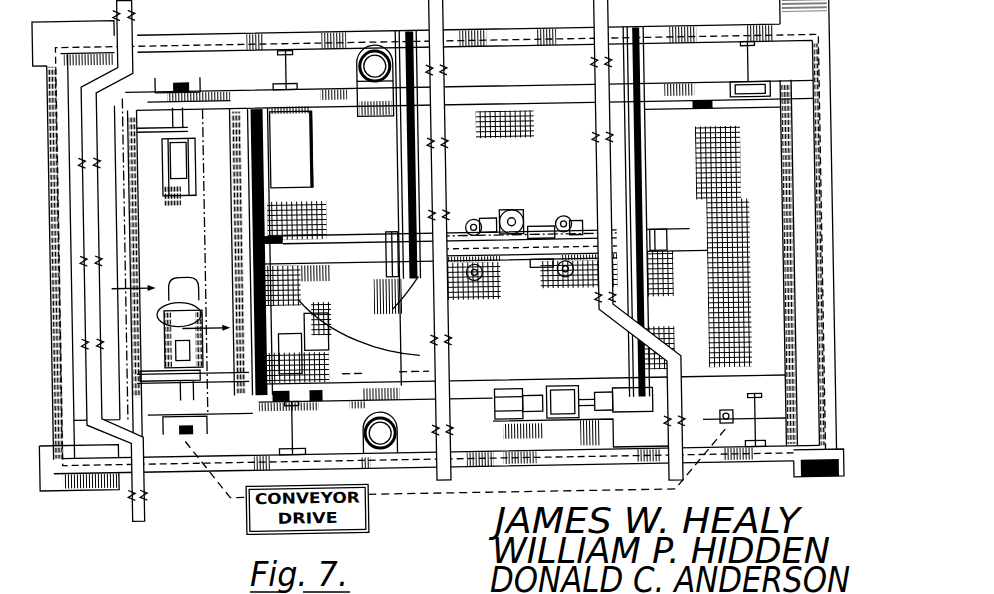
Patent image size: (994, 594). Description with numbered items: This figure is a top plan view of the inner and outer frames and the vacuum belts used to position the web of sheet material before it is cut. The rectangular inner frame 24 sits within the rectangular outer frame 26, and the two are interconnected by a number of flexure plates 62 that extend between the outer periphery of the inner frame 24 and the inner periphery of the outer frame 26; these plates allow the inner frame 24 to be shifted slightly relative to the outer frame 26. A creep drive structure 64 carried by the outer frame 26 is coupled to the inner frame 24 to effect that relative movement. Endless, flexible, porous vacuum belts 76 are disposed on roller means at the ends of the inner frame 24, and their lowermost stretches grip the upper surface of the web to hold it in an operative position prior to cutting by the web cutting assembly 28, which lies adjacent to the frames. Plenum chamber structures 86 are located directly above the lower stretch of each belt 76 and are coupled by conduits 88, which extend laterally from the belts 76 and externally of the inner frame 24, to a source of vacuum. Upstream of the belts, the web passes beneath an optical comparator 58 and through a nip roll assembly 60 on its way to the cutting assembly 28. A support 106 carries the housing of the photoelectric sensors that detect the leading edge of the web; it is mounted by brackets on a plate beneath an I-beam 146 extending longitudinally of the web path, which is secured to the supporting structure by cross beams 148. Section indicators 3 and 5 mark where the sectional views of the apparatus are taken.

The section line 3- 3 is at (452, 510).
The section line 5- 5 is at (617, 255).
The inner frame 24 is at (144, 412).
The outer frame 26 is at (153, 469).
The web cutting assembly 28 is at (230, 221).
The optical comparator 58 is at (108, 97).
The nip roll assembly 60 is at (164, 278).
The flexure plates 62 is at (289, 72).
The creep drive structure 64 is at (559, 392).
The vacuum belts 76 is at (741, 268).
The plenum chamber structures 86 is at (361, 262).
The conduits 88 is at (361, 75).
The support 106 is at (533, 202).
The I-beam 146 is at (664, 248).
The cross beams 148 is at (398, 46).